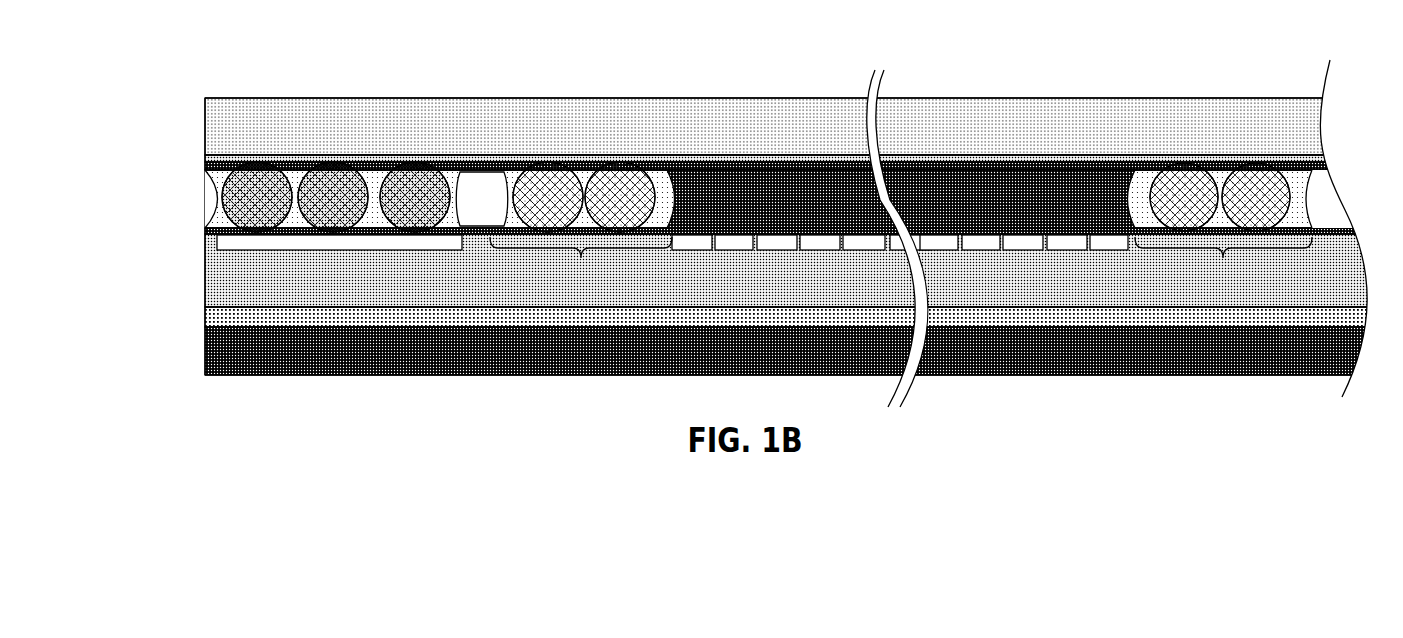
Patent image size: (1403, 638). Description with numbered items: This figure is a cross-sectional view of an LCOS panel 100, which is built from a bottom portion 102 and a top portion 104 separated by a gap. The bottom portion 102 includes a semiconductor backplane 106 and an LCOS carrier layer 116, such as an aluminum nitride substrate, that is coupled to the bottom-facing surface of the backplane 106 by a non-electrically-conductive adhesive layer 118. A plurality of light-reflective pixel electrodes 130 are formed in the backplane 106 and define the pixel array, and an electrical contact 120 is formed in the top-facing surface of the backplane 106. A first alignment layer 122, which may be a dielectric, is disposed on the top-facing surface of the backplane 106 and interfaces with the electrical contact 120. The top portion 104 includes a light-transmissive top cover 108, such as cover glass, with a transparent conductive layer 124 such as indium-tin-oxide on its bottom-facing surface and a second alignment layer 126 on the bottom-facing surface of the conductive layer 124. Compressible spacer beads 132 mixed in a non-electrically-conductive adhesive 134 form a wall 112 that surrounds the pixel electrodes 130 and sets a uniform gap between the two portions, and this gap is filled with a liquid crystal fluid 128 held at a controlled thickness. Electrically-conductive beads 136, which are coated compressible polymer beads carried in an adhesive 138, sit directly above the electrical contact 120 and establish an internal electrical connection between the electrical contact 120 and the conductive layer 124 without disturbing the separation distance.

The LCOS panel 100 is at (1097, 62).
The bottom portion 102 is at (767, 301).
The top portion 104 is at (767, 134).
The backplane 106 is at (948, 287).
The top cover 108 is at (940, 136).
The wall 112 is at (901, 262).
The LCOS carrier layer 116 is at (1123, 360).
The adhesive layer 118 is at (1027, 316).
The electrical contact 120 is at (463, 243).
The first alignment layer 122 is at (1335, 233).
The conductive layer 124 is at (818, 158).
The second alignment layer 126 is at (763, 162).
The liquid crystal fluid 128 is at (753, 205).
The pixel electrodes 130 is at (866, 245).
The spacer beads 132 is at (620, 181).
The non-electrically-conductive adhesive 134 is at (503, 171).
The electrically-conductive beads 136 is at (268, 176).
The adhesive 138 is at (219, 217).